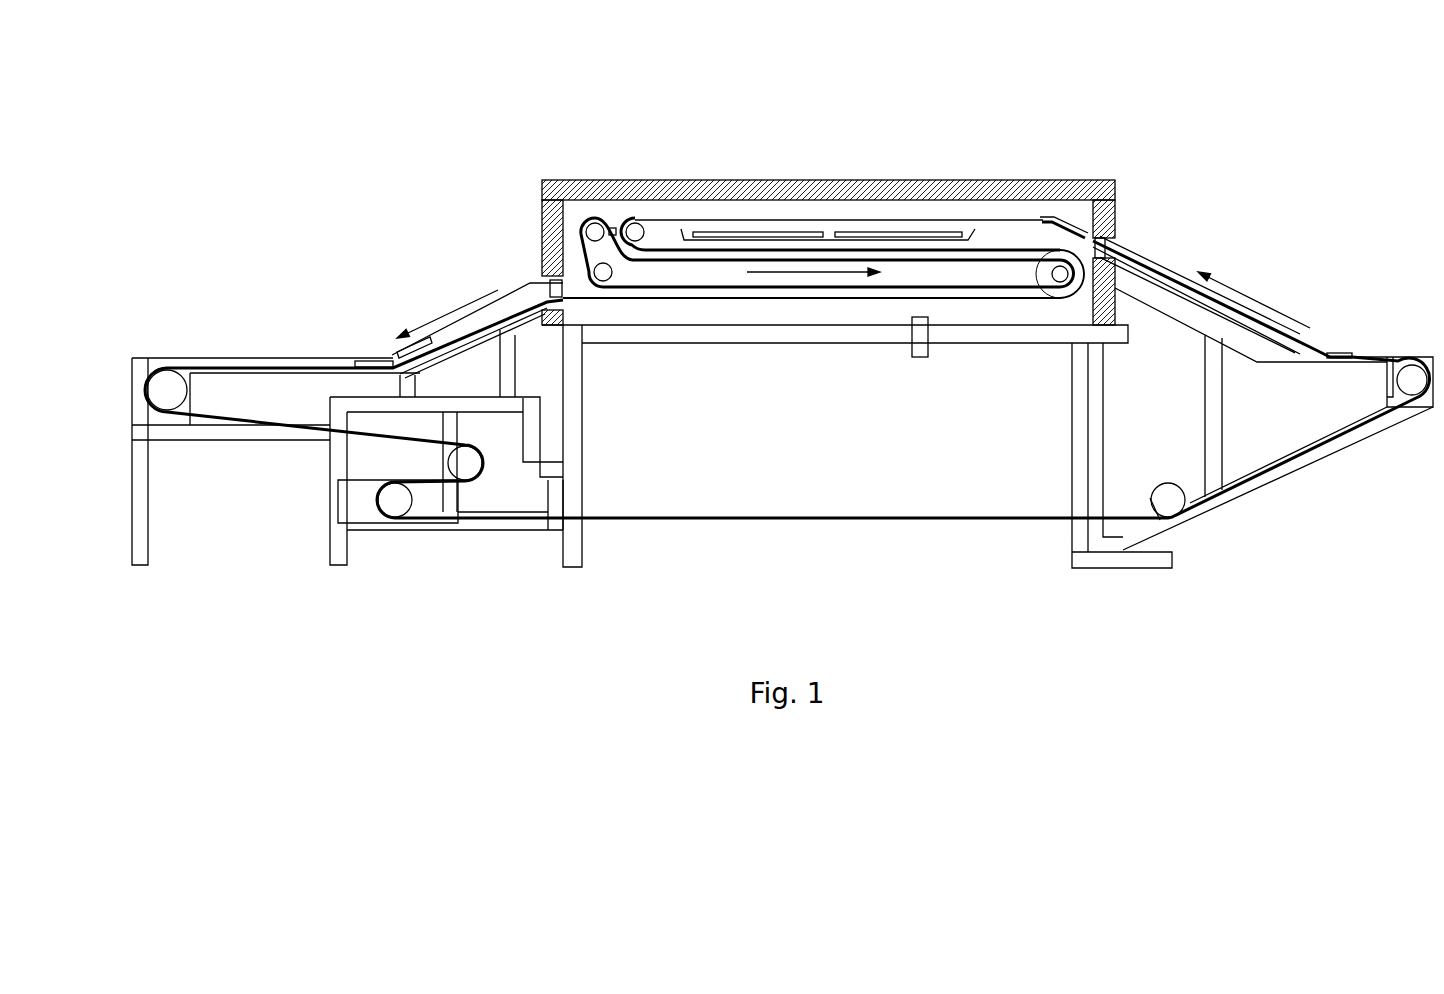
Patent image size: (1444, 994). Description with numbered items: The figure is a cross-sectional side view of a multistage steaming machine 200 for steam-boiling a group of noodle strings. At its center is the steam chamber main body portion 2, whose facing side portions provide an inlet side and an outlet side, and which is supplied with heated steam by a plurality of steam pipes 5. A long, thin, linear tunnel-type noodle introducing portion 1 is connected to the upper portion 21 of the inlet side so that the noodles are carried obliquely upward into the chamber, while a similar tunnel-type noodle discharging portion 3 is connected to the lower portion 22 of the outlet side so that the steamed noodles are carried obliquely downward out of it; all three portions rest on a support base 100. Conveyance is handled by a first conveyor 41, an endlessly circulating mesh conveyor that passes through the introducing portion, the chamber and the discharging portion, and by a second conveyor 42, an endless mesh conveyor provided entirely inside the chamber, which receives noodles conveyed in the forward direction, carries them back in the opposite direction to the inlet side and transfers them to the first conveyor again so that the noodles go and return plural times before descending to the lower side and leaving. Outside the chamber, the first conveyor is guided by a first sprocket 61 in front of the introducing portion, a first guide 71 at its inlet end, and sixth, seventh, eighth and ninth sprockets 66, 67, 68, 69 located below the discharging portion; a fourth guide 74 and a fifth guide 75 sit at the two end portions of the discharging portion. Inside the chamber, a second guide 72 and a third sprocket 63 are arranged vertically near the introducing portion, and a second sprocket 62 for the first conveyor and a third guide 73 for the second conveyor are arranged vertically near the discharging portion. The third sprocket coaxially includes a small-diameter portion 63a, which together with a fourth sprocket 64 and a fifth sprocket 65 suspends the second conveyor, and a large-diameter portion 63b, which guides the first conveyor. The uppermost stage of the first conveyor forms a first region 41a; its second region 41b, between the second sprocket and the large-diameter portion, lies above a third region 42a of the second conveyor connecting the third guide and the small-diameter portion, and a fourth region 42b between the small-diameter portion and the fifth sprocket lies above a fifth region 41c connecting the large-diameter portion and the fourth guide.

The multistage steaming machine 200 is at (1137, 135).
The steam chamber main body portion 2 is at (847, 181).
The upper portion of the inlet side 21 is at (1115, 208).
The lower portion of the outlet side 22 is at (550, 277).
The noodle introducing portion 1 is at (1163, 265).
The noodle discharging portion 3 is at (547, 290).
The steam pipes 5 is at (942, 233).
The first conveyor 41 is at (1296, 468).
The first region 41a is at (898, 219).
The second region 41b is at (800, 248).
The fifth region 41c is at (755, 300).
The second conveyor 42 is at (583, 252).
The third region 42a is at (722, 259).
The fourth region 42b is at (998, 280).
The first sprocket 61 is at (1413, 382).
The second sprocket 62 is at (634, 234).
The third sprocket 63 is at (968, 387).
The small-diameter portion 63a is at (1042, 294).
The large-diameter portion 63b is at (1062, 290).
The fourth sprocket 64 is at (594, 234).
The fifth sprocket 65 is at (607, 274).
The sixth sprocket 66 is at (167, 388).
The seventh sprocket 67 is at (466, 466).
The eighth sprocket 68 is at (395, 504).
The ninth sprocket 69 is at (1163, 494).
The first guide 71 is at (1330, 352).
The second guide 72 is at (1073, 221).
The third guide 73 is at (612, 229).
The fourth guide 74 is at (530, 322).
The fifth guide 75 is at (393, 366).
The support base 100 is at (855, 333).